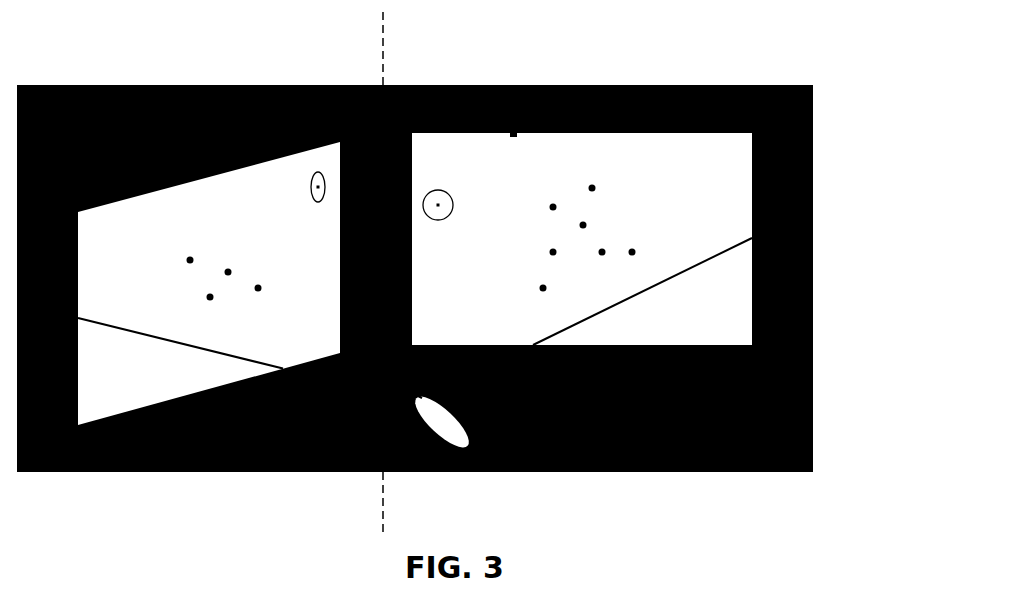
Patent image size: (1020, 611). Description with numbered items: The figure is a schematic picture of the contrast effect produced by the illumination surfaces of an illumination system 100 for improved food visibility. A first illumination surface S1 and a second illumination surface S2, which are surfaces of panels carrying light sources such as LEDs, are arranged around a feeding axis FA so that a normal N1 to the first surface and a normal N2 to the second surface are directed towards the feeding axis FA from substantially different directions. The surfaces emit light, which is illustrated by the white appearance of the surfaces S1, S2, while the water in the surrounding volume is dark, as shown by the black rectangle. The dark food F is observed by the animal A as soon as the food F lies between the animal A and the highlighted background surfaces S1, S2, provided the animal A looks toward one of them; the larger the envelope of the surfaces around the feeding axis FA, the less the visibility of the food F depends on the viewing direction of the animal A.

The illumination system 100 is at (846, 191).
The feeding axis FA is at (383, 58).
The first illumination surface S1 is at (454, 171).
The second illumination surface S2 is at (124, 247).
The normal N1 is at (441, 220).
The normal N2 is at (311, 196).
The food F is at (186, 260).
The animal A is at (442, 421).